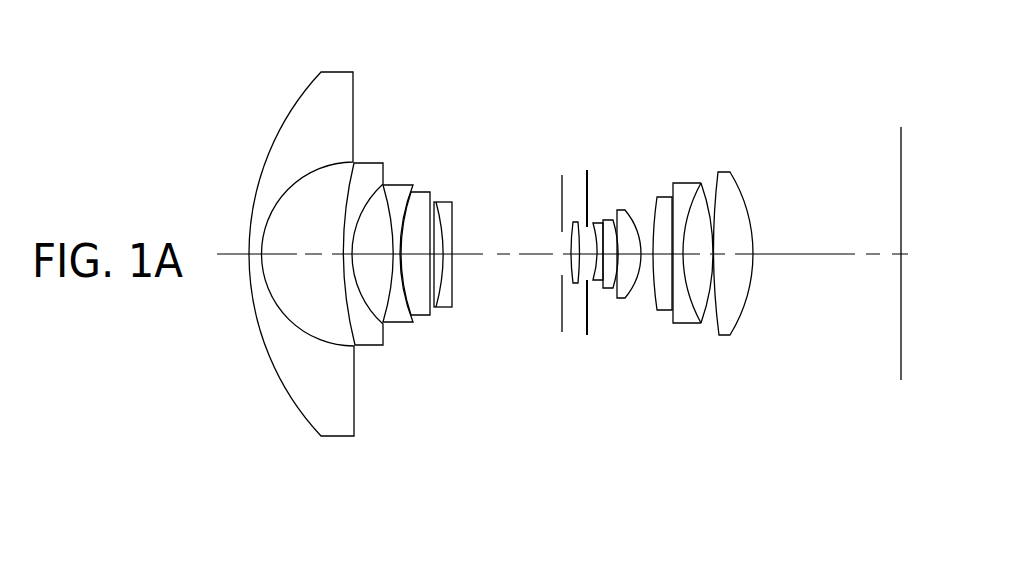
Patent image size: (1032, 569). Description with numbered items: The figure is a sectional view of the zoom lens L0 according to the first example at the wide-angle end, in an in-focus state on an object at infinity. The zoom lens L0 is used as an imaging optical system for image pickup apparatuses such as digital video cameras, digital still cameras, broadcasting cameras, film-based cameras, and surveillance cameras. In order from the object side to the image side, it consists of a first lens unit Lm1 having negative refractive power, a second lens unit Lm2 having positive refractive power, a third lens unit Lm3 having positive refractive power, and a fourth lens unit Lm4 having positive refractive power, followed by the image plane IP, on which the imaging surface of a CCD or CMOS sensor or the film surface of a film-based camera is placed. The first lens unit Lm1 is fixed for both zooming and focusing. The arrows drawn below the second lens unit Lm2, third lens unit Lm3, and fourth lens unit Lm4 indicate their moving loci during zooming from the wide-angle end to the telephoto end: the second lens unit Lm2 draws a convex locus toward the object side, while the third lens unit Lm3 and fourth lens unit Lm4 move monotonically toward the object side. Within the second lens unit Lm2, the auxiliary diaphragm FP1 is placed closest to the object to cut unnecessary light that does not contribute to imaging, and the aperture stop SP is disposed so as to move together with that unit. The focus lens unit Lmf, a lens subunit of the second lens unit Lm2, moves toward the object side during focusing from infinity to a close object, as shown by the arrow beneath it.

The zoom lens L0 is at (567, 265).
The first lens unit Lm1 is at (271, 423).
The second lens unit Lm2 is at (579, 317).
The third lens unit Lm3 is at (636, 508).
The fourth lens unit Lm4 is at (706, 508).
The focus lens unit Lmf is at (590, 326).
The auxiliary diaphragm FP1 is at (562, 187).
The aperture stop SP is at (589, 171).
The image plane IP is at (904, 236).